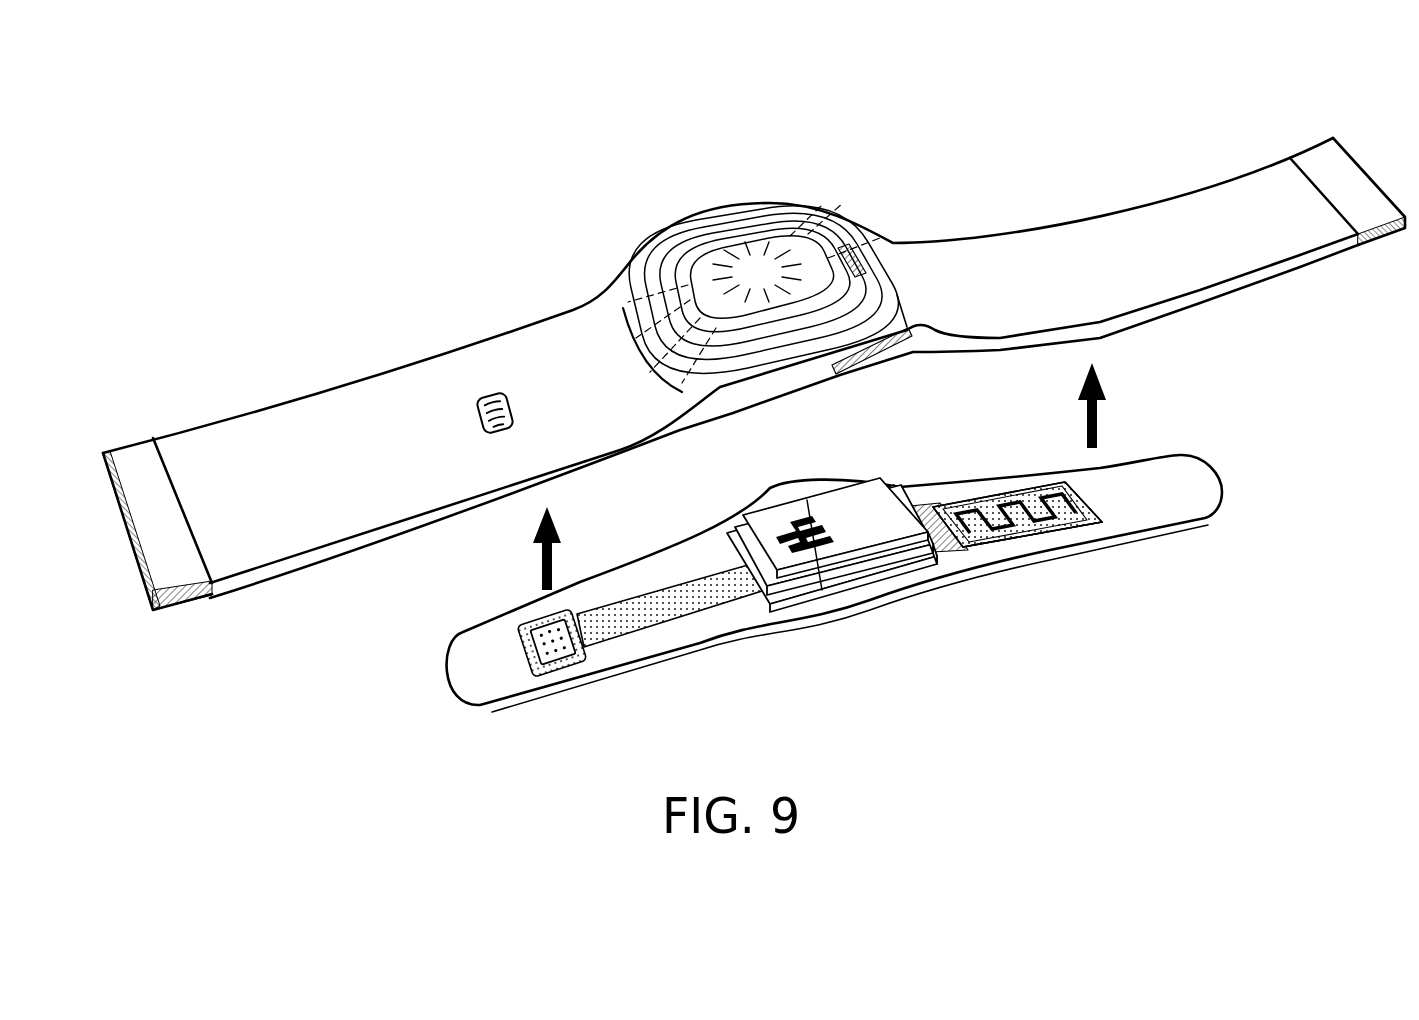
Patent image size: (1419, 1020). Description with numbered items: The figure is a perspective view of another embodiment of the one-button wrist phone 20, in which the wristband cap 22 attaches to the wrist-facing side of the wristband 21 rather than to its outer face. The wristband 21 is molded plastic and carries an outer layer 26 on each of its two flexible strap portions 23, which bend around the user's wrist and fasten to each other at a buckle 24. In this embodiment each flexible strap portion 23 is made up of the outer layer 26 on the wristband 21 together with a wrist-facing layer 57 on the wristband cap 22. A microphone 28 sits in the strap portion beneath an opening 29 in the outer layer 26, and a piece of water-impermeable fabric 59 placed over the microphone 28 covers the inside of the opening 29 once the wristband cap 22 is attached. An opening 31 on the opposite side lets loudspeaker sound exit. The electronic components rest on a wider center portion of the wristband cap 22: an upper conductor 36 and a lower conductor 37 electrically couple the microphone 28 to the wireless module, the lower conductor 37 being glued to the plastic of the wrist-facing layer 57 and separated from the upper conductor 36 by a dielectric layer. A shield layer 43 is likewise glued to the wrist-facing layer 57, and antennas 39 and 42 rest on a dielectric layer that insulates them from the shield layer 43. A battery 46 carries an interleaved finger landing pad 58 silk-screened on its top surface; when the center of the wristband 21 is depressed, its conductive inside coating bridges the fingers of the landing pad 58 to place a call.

The one-button wrist phone 20 is at (424, 172).
The wristband 21 is at (643, 242).
The wristband cap 22 is at (1185, 458).
The flexible strap portion 23 is at (357, 549).
The buckle 24 is at (190, 600).
The outer layer 26 is at (762, 365).
The microphone 28 is at (533, 643).
The opening 29 is at (512, 413).
The opening 31 is at (868, 264).
The upper conductor 36 is at (605, 608).
The lower conductor 37 is at (607, 652).
The antenna 39 is at (1013, 496).
The antenna 42 is at (990, 536).
The shield layer 43 is at (1098, 514).
The battery 46 is at (832, 545).
The wrist-facing layer 57 is at (820, 574).
The interleaved finger landing pad 58 is at (834, 534).
The water-impermeable fabric 59 is at (545, 666).